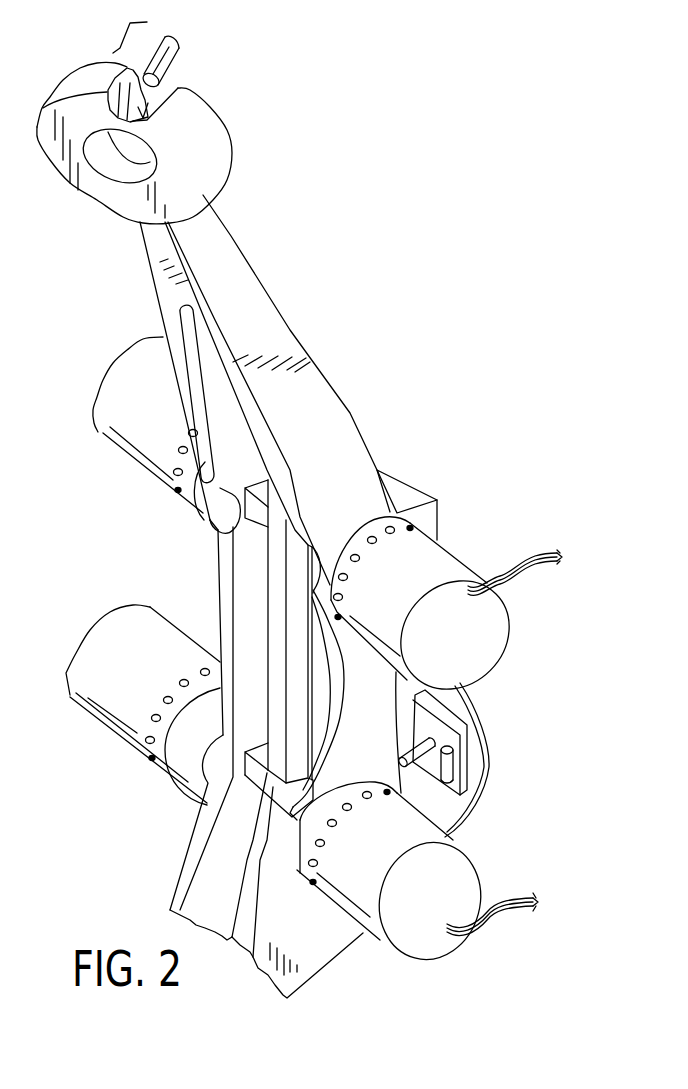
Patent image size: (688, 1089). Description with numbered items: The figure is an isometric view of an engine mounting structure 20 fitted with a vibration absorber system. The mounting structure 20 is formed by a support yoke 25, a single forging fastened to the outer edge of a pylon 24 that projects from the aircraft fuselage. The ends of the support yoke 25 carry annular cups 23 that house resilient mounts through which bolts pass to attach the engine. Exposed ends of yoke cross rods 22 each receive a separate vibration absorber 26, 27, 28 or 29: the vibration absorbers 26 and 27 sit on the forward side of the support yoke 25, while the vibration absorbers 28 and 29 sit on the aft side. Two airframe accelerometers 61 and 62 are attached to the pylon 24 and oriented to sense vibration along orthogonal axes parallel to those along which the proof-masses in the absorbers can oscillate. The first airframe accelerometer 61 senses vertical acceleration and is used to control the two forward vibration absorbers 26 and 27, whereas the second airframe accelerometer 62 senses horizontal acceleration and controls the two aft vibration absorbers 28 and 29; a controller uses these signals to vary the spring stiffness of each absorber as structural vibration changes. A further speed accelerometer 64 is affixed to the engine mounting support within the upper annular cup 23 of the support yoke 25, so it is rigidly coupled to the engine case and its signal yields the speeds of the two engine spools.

The engine mounting structure 20 is at (389, 378).
The yoke cross rods 22 is at (328, 443).
The annular cups 23 is at (203, 129).
The pylon 24 is at (440, 500).
The support yoke 25 is at (267, 317).
The vibration absorber 26 is at (170, 422).
The vibration absorber 27 is at (130, 667).
The vibration absorber 28 is at (423, 593).
The vibration absorber 29 is at (380, 865).
The first airframe accelerometer 61 is at (453, 757).
The second airframe accelerometer 62 is at (430, 740).
The speed accelerometer 64 is at (178, 45).